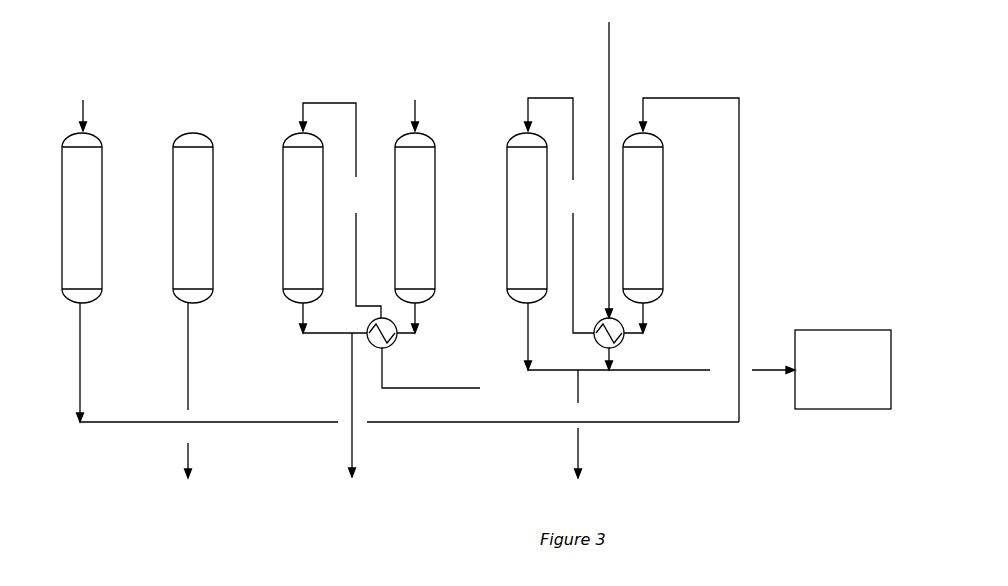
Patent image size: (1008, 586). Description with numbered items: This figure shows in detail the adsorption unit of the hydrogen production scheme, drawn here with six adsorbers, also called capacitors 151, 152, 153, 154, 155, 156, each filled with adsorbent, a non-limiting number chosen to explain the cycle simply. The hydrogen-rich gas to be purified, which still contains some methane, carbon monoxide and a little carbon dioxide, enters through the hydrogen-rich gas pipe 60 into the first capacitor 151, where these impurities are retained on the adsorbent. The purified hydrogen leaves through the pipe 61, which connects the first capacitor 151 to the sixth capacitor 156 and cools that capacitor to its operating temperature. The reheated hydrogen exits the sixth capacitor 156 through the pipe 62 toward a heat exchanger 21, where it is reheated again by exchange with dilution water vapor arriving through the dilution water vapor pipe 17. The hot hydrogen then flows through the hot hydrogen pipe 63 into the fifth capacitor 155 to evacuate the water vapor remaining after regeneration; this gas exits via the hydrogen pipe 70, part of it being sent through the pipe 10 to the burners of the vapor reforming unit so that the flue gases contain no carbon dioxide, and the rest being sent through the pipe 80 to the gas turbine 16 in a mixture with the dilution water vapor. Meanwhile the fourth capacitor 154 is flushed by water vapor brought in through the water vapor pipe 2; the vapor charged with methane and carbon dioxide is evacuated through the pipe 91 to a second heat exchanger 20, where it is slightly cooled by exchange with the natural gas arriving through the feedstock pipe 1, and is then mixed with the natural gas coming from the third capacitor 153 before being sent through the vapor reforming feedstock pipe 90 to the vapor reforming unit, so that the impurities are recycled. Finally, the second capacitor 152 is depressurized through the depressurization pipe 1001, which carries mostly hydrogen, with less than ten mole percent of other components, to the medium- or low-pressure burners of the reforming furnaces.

The first capacitor 151 is at (77, 237).
The second capacitor 152 is at (188, 240).
The third capacitor 153 is at (298, 237).
The fourth capacitor 154 is at (420, 232).
The fifth capacitor 155 is at (530, 232).
The sixth capacitor 156 is at (650, 227).
The gas turbine 16 is at (820, 350).
The hydrogen-rich gas pipe 60 is at (85, 101).
The feedstock pipe 1 is at (341, 199).
The water vapor pipe 2 is at (415, 106).
The hot hydrogen pipe 63 is at (560, 203).
The pipe 61 is at (690, 249).
The dilution water vapor pipe 17 is at (595, 170).
The pipe 91 is at (373, 319).
The heat exchanger 20 is at (431, 368).
The vapor reforming feedstock pipe 90 is at (367, 405).
The depressurization pipe 1001 is at (408, 390).
The hydrogen pipe 70 is at (642, 338).
The pipe 62 is at (649, 318).
The heat exchanger 21 is at (629, 356).
The pipe 80 is at (591, 374).
The pipe 10 is at (591, 453).